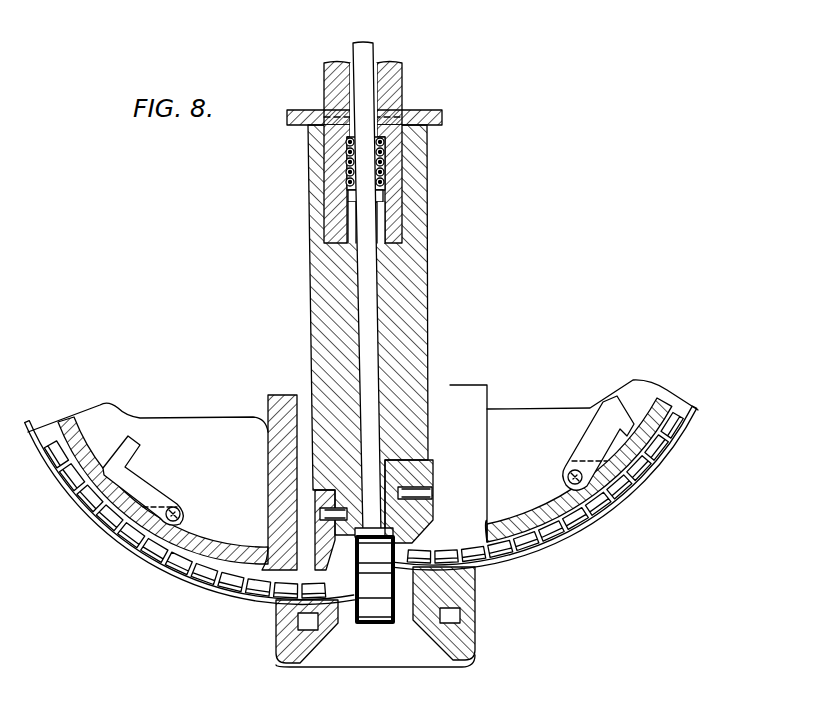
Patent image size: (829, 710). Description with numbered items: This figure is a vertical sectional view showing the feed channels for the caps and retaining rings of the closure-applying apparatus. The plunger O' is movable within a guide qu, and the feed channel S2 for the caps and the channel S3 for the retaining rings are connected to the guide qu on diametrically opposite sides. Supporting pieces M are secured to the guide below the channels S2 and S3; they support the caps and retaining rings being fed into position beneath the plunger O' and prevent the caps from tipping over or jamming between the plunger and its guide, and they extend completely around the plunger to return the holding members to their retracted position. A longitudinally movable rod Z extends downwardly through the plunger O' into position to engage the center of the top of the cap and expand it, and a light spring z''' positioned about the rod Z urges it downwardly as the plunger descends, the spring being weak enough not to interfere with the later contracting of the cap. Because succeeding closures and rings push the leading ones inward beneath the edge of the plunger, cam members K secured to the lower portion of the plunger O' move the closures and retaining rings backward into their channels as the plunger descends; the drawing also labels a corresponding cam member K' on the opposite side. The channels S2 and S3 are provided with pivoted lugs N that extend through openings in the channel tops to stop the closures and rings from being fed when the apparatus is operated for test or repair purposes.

The longitudinally movable rod Z is at (367, 58).
The light spring z''' is at (423, 163).
The plunger O' is at (383, 299).
The guide qu is at (468, 408).
The pivoted lugs N is at (590, 460).
The left block K' is at (323, 531).
The cam members K is at (415, 501).
The feed channel for the caps S2 is at (127, 547).
The channel for the retaining rings S3 is at (603, 493).
The supporting pieces M is at (277, 618).